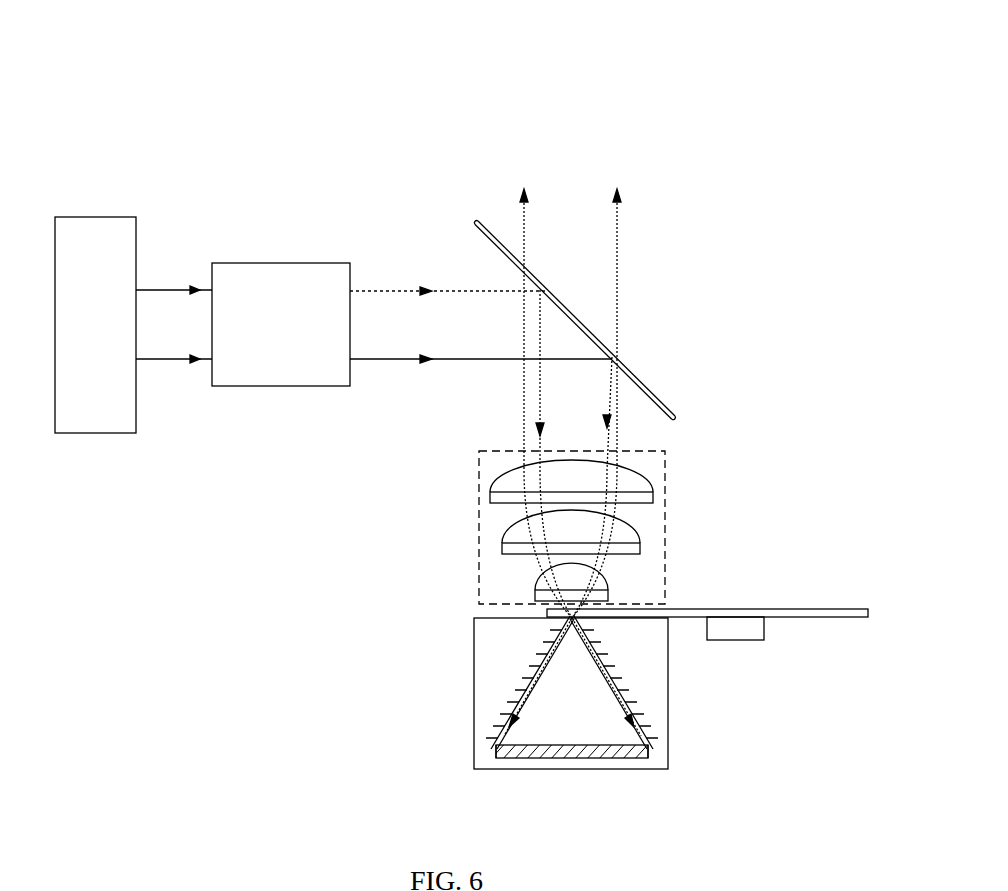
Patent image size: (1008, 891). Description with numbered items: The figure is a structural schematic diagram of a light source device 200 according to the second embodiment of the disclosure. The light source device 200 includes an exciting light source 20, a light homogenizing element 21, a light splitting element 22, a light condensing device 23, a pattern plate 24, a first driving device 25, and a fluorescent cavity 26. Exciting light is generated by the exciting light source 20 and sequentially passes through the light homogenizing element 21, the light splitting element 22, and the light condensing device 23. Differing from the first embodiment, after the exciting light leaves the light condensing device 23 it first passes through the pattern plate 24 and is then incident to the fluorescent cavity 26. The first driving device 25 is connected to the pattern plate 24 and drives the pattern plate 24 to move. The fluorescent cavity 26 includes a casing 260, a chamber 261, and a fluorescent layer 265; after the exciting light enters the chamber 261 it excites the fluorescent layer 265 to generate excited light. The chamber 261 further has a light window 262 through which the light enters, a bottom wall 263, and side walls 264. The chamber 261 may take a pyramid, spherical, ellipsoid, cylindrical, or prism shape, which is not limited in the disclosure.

The light source device 200 is at (443, 58).
The exciting light source 20 is at (81, 228).
The light homogenizing element 21 is at (263, 272).
The light splitting element 22 is at (631, 372).
The light condensing device 23 is at (497, 450).
The pattern plate 24 is at (746, 613).
The first driving device 25 is at (750, 632).
The fluorescent cavity 26 is at (473, 703).
The casing 260 is at (655, 682).
The chamber 261 is at (571, 745).
The light window 262 is at (560, 622).
The bottom wall 263 is at (517, 760).
The side walls 264 is at (530, 673).
The fluorescent layer 265 is at (620, 755).